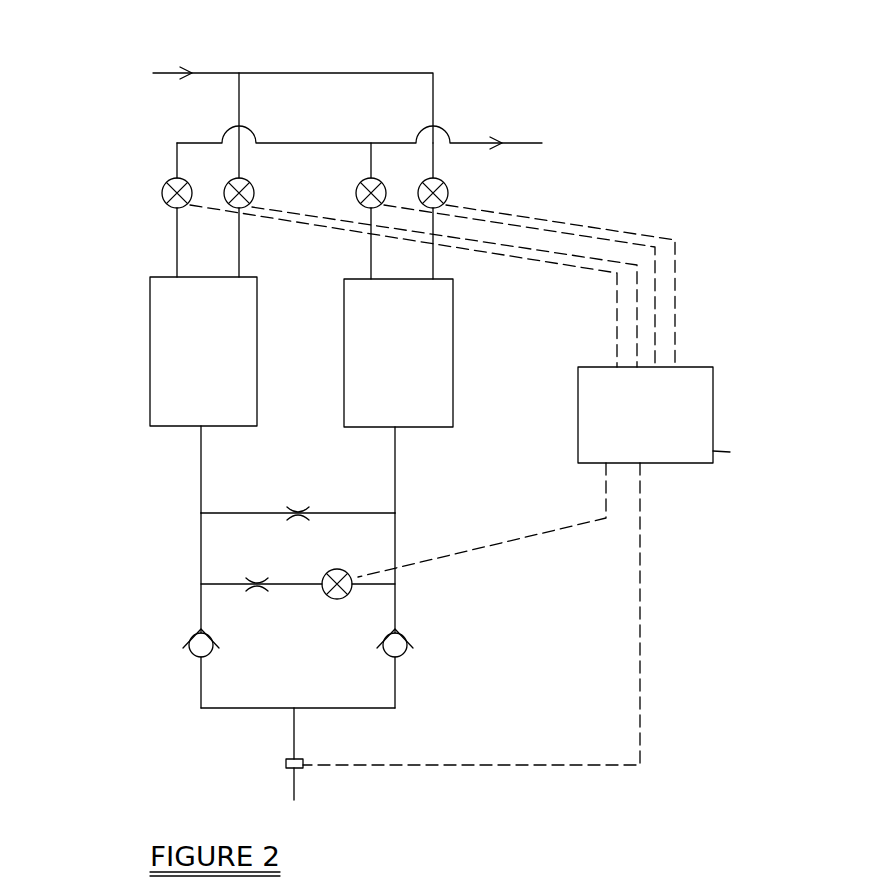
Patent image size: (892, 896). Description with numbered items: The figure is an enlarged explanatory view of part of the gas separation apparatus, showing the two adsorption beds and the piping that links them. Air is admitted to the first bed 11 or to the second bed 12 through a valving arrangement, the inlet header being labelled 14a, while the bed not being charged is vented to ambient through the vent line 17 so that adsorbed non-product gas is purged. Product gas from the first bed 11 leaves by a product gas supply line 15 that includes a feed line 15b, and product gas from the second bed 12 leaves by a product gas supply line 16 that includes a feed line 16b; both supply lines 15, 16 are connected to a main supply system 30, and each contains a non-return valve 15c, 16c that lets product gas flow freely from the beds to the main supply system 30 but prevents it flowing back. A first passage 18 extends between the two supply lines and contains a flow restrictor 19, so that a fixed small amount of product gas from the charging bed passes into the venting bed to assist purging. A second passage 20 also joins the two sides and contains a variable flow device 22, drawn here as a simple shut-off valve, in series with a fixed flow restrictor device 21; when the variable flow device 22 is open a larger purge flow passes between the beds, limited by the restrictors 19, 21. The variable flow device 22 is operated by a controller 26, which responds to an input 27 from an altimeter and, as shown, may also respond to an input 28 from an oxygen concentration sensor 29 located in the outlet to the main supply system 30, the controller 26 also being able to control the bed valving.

The feed line 14a is at (340, 73).
The vent line 17 is at (528, 143).
The second bed 12 is at (158, 382).
The first bed 11 is at (447, 383).
The feed line 16b is at (201, 490).
The feed line 15b is at (395, 492).
The first passage 18 is at (342, 513).
The flow restrictor 19 is at (293, 507).
The second passage 20 is at (287, 584).
The fixed flow restrictor device 21 is at (254, 580).
The variable flow device 22 is at (330, 600).
The product gas supply line 16 is at (200, 556).
The product gas supply line 15 is at (398, 548).
The non-return valve 16c is at (193, 648).
The non-return valve 15c is at (405, 645).
The input 27 is at (713, 415).
The controller 26 is at (730, 452).
The input 28 is at (640, 465).
The main supply system 30 is at (293, 785).
The oxygen concentration sensor 29 is at (300, 770).